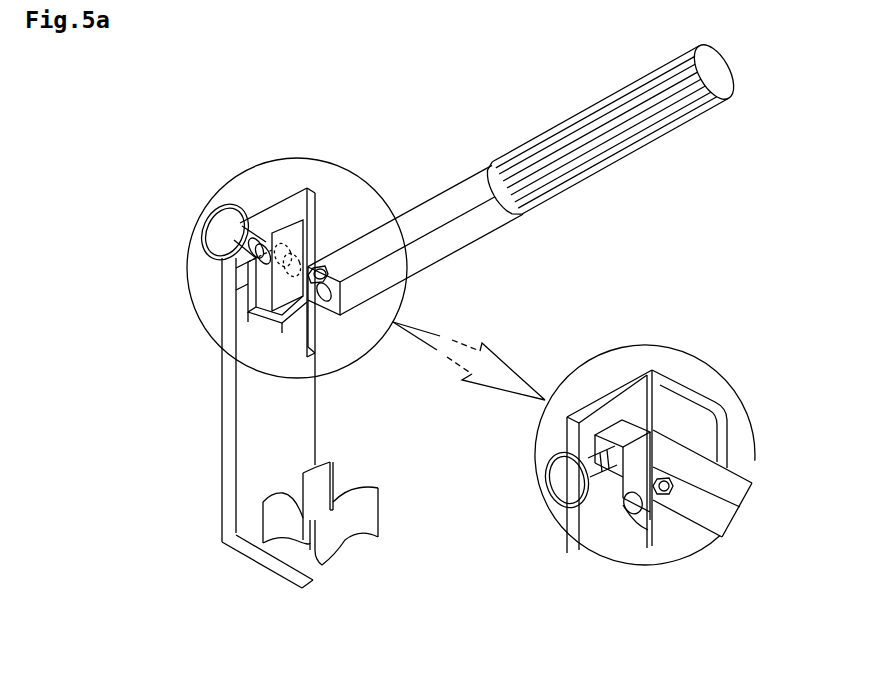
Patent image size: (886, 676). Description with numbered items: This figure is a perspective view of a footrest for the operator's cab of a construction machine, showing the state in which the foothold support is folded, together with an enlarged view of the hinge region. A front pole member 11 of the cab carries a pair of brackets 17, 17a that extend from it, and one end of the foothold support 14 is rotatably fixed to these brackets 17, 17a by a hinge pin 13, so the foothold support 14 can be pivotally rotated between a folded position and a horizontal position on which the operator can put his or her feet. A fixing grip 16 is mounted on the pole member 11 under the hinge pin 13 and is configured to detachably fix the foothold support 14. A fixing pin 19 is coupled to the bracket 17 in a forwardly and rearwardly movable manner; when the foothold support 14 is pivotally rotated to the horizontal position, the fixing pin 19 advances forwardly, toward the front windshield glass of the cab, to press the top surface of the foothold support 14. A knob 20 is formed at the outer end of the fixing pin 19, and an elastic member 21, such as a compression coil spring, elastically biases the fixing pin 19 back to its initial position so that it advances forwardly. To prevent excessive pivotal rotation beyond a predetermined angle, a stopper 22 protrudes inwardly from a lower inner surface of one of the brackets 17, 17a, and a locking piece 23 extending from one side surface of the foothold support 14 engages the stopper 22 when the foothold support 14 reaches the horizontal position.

The front pole member 11 is at (227, 463).
The hinge pin 13 is at (345, 268).
The foothold support 14 is at (623, 157).
The fixing grip 16 is at (268, 520).
The bracket 17 is at (263, 217).
The bracket 17a is at (362, 320).
The fixing pin 19 is at (245, 255).
The knob 20 is at (200, 232).
The elastic member 21 is at (245, 280).
The stopper 22 is at (330, 340).
The locking piece 23 is at (288, 330).